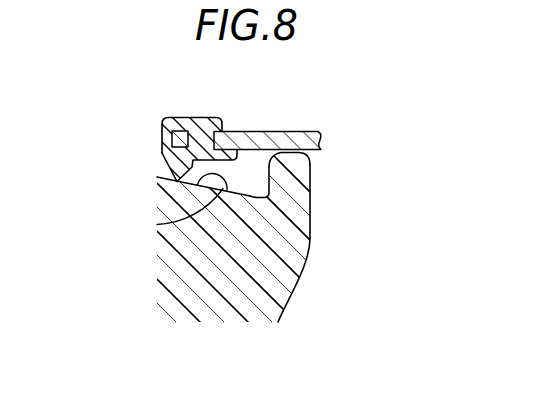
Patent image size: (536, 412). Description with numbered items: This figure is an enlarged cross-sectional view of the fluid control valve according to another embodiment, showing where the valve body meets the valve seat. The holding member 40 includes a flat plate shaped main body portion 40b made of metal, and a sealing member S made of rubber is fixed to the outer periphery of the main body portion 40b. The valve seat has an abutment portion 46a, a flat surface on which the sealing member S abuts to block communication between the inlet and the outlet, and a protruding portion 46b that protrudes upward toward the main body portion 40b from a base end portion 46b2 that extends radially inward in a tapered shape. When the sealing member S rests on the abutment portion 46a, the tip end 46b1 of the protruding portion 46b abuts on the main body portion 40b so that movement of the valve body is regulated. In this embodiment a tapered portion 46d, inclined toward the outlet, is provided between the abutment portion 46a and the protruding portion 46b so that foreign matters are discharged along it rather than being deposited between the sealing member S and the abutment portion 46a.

The sealing member S is at (164, 138).
The holding member 40 is at (263, 115).
The main body portion 40b is at (238, 131).
The abutment portion 46a is at (170, 223).
The protruding portion 46b is at (329, 206).
The tip end 46b1 is at (289, 152).
The base end portion 46b2 is at (263, 307).
The tapered portion 46d is at (261, 196).